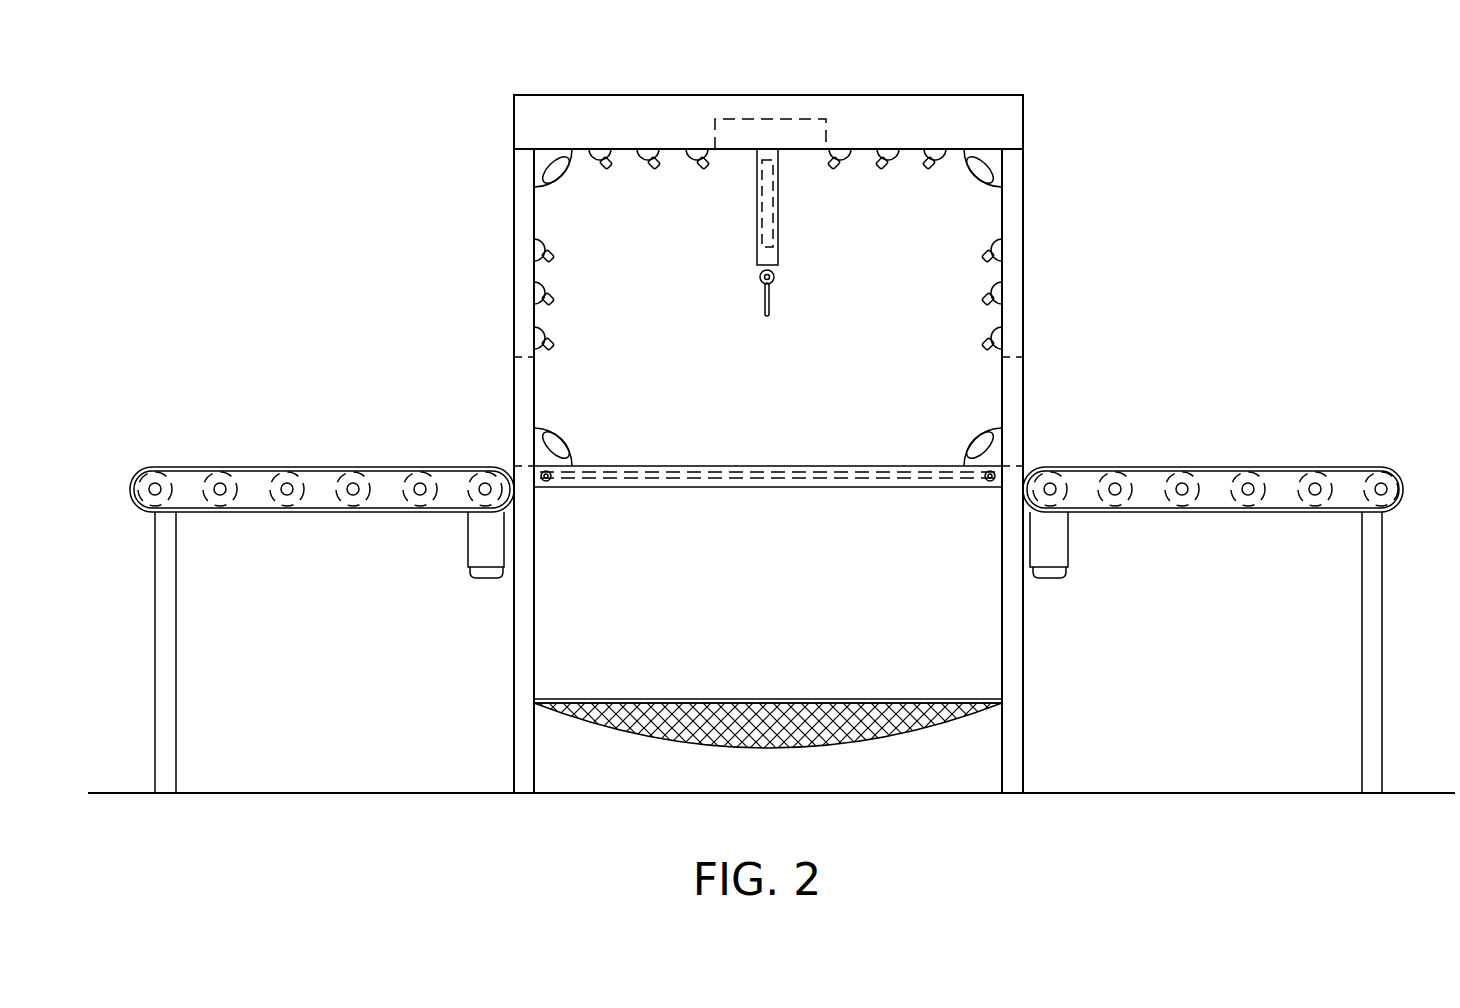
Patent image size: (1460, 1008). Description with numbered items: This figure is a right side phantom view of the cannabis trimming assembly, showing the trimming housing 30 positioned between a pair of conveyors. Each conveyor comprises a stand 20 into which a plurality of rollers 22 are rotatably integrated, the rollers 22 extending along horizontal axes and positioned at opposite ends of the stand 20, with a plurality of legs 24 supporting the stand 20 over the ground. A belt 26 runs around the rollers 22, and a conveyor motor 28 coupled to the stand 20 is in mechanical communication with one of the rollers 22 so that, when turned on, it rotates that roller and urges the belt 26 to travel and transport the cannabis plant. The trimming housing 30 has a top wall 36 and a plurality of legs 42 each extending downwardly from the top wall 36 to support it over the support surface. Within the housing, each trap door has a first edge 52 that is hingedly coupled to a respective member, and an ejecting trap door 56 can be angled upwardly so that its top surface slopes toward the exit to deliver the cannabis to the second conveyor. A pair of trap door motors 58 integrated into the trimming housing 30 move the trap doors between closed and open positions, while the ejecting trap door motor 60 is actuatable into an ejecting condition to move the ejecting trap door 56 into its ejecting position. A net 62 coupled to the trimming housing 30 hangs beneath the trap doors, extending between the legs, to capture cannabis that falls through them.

The stand 20 is at (252, 486).
The rollers 22 is at (220, 482).
The legs 24 is at (155, 637).
The belt 26 is at (310, 466).
The conveyor motor 28 is at (470, 568).
The trimming housing 30 is at (1023, 95).
The top wall 36 is at (874, 95).
The legs 42 is at (513, 728).
The first edge 52 is at (730, 474).
The ejecting trap door 56 is at (878, 487).
The trap door motors 58 is at (546, 482).
The ejecting trap door motor 60 is at (993, 465).
The net 62 is at (905, 725).